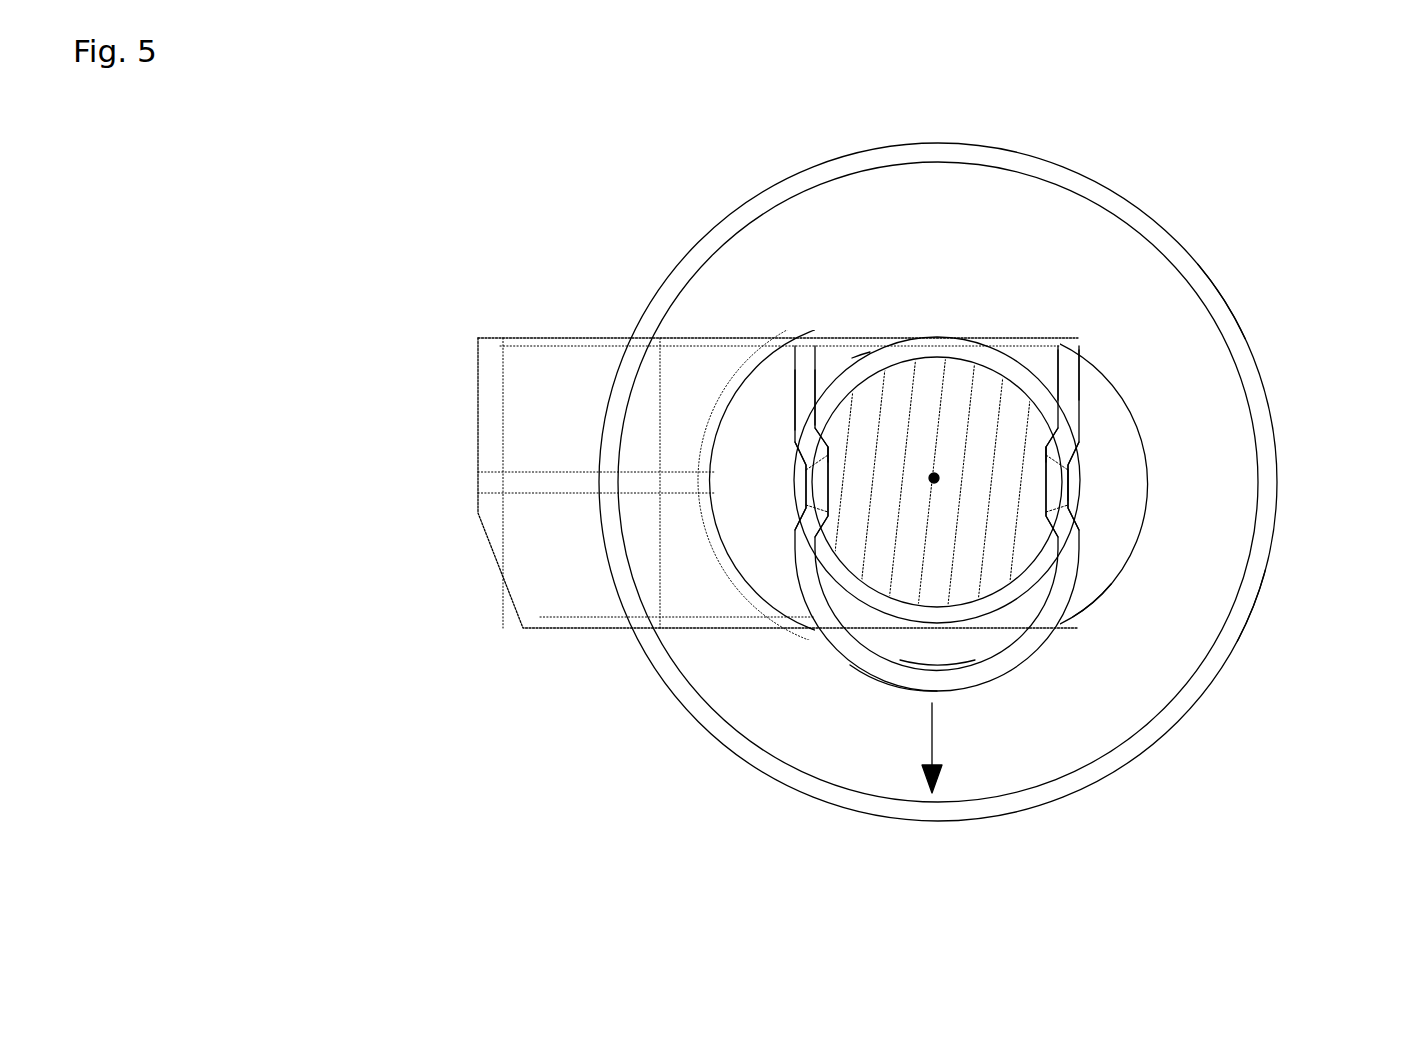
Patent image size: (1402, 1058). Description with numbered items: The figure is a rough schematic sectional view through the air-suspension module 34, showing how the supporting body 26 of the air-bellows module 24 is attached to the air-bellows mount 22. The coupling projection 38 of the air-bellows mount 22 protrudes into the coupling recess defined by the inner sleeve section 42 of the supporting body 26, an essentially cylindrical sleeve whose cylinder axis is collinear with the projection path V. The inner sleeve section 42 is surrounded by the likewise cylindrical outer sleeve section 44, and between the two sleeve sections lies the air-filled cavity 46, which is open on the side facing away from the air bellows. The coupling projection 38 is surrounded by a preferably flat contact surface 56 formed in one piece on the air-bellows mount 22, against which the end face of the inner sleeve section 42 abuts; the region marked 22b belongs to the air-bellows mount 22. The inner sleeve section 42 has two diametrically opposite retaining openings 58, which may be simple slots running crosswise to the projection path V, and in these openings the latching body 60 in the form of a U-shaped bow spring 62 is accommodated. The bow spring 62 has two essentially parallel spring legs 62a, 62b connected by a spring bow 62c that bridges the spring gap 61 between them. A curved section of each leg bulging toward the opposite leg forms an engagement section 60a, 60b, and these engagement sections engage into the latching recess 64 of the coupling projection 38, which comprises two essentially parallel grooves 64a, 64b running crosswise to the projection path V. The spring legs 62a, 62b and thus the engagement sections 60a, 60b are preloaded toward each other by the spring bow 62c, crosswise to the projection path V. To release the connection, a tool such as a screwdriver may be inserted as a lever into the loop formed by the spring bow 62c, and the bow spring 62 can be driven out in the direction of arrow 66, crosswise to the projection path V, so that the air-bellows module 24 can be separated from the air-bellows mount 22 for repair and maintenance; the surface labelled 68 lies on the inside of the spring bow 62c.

The air-bellows mount 22 is at (525, 577).
The shaft section 22b is at (1097, 620).
The air-bellows module 24 is at (874, 138).
The supporting body 26 is at (1316, 383).
The air-suspension module 34 is at (1322, 868).
The coupling projection 38 is at (736, 178).
The inner sleeve section 42 is at (946, 346).
The outer sleeve section 44 is at (1198, 270).
The cavity 46 is at (890, 241).
The contact surface 56 is at (1106, 406).
The retaining openings 58 is at (1077, 505).
The latching body 60 is at (937, 482).
The engagement section 60a is at (820, 481).
The engagement section 60b is at (1058, 486).
The spring gap 61 is at (852, 356).
The bow spring 62 is at (802, 645).
The spring leg 62a is at (803, 413).
The spring leg 62b is at (1075, 357).
The spring bow 62c is at (876, 666).
The latching recess 64 is at (884, 418).
The groove 64a is at (830, 443).
The groove 64b is at (1044, 443).
The arrow 66 is at (933, 738).
The inner surface 68 is at (964, 646).
The projection path V is at (931, 486).